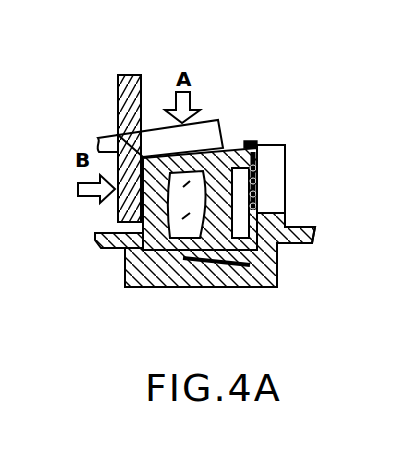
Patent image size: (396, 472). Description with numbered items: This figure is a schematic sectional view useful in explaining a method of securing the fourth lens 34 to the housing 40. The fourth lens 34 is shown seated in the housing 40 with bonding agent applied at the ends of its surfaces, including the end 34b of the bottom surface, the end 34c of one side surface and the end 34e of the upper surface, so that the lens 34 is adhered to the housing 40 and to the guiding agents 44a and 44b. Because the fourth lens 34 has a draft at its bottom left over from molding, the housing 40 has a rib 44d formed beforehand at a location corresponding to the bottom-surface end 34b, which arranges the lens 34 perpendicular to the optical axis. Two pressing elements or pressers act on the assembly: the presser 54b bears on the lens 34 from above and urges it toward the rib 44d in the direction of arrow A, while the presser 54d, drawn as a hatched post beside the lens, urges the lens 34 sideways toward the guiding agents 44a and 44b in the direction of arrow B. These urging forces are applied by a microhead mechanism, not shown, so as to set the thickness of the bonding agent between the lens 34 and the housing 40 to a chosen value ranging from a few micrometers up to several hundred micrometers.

The presser 54d is at (147, 87).
The presser 54b is at (224, 143).
The fourth lens 34 is at (243, 142).
The end of the upper surface 34e is at (257, 145).
The end of one side surface 34c is at (265, 197).
The end of the bottom surface 34b is at (167, 273).
The guiding agent 44a is at (287, 162).
The guiding agent 44b is at (290, 233).
The rib 44d is at (258, 287).
The housing 40 is at (207, 287).